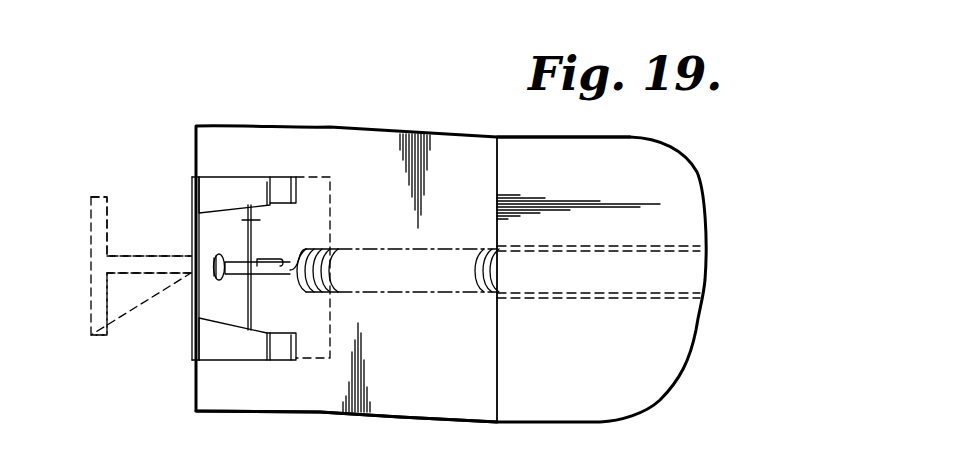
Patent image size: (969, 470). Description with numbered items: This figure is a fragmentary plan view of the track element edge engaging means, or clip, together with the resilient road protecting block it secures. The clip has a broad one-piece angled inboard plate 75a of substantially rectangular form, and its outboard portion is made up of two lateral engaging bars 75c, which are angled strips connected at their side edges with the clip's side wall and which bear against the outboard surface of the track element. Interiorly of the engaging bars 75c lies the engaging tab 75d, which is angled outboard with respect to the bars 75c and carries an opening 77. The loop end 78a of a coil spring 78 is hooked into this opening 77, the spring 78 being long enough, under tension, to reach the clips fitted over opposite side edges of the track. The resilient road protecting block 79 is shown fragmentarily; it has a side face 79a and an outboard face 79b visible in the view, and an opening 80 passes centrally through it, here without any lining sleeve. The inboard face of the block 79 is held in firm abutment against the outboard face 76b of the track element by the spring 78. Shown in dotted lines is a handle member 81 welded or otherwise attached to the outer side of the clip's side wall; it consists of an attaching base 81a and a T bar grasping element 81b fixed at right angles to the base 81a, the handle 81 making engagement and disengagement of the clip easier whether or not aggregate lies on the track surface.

The inboard plate 75a is at (331, 358).
The lateral engaging bars 75c is at (251, 186).
The engaging tab 75d is at (254, 222).
The outboard face of track element 76b is at (428, 413).
The opening 77 is at (215, 280).
The coil spring 78 is at (334, 293).
The loop end of coil spring 78a is at (244, 262).
The resilient road protecting block 79 is at (660, 166).
The side face of block 79a is at (496, 226).
The outboard face of block 79b is at (556, 136).
The opening 80 is at (659, 246).
The handle member 81 is at (60, 261).
The attaching base 81a is at (160, 264).
The T bar grasping element 81b is at (100, 196).